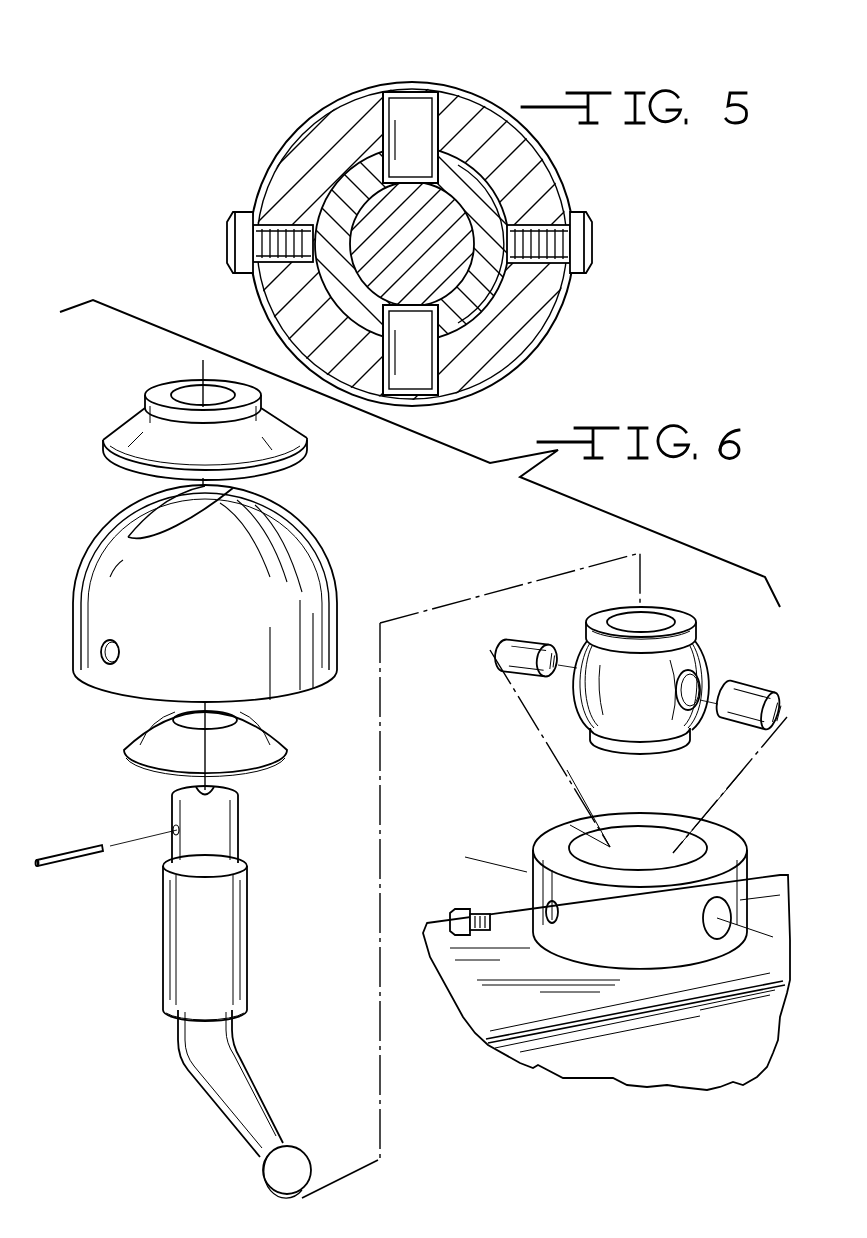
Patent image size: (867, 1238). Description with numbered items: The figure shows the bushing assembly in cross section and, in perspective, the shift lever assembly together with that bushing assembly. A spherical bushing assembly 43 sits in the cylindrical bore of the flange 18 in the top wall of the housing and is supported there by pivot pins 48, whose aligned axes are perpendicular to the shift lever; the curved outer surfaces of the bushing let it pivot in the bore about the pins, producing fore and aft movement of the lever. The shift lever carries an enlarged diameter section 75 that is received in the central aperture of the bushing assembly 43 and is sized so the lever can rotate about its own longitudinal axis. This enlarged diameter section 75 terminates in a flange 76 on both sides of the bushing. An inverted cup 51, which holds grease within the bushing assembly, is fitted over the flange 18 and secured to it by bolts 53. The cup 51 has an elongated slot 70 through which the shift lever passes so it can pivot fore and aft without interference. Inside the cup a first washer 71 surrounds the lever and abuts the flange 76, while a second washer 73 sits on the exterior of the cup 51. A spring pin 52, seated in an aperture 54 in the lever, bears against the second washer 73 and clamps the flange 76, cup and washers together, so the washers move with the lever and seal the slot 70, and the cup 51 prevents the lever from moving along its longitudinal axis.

In FIG. 5, the flange 18 is at (500, 340).
In FIG. 6, the flange 18 is at (555, 833).
In FIG. 5, the spherical bushing assembly 43 is at (530, 176).
In FIG. 6, the spherical bushing assembly 43 is at (704, 642).
In FIG. 5, the pivot pins 48 is at (410, 115).
In FIG. 6, the pivot pins 48 is at (760, 683).
In FIG. 5, the cup 51 is at (572, 193).
In FIG. 6, the cup 51 is at (333, 582).
In FIG. 6, the spring pin 52 is at (80, 857).
In FIG. 5, the bolts 53 is at (227, 243).
In FIG. 6, the bolts 53 is at (470, 878).
In FIG. 6, the aperture 54 is at (177, 803).
In FIG. 6, the elongated slot 70 is at (200, 487).
In FIG. 6, the first washer 71 is at (287, 745).
In FIG. 6, the second washer 73 is at (307, 432).
In FIG. 5, the enlarged diameter section 75 is at (468, 272).
In FIG. 6, the enlarged diameter section 75 is at (163, 955).
In FIG. 6, the flange 76 is at (247, 872).